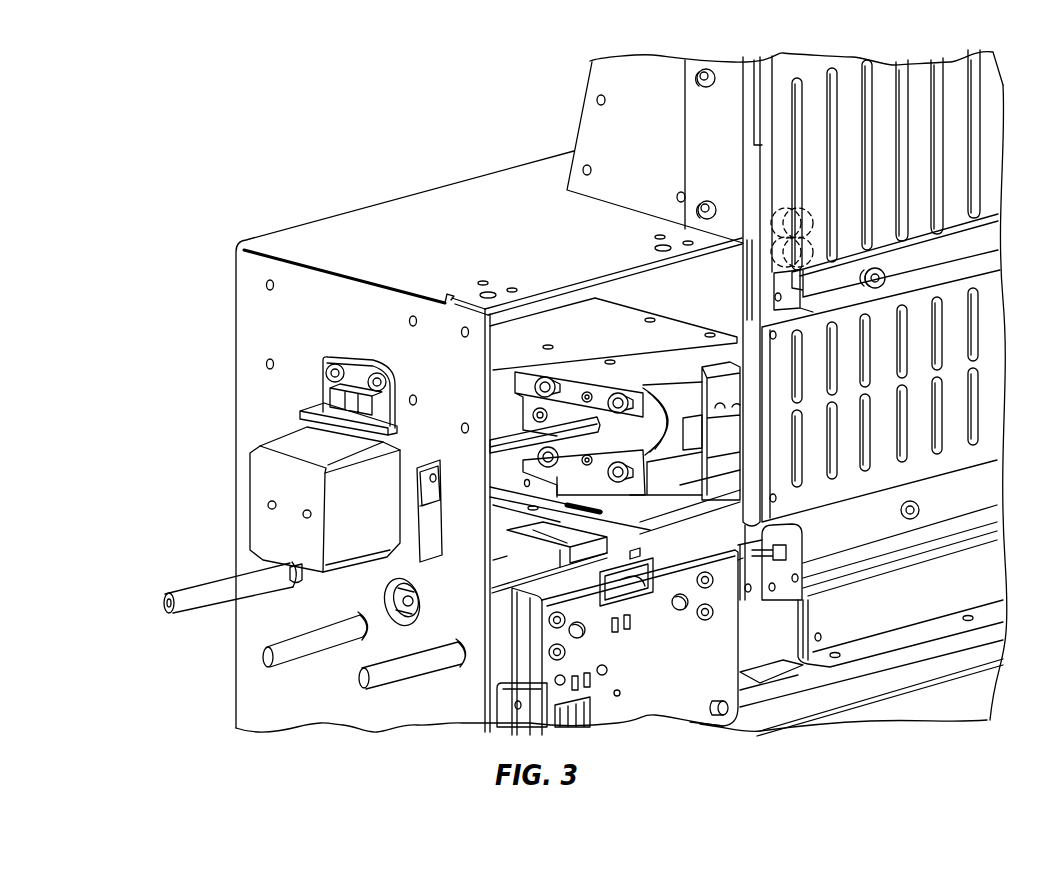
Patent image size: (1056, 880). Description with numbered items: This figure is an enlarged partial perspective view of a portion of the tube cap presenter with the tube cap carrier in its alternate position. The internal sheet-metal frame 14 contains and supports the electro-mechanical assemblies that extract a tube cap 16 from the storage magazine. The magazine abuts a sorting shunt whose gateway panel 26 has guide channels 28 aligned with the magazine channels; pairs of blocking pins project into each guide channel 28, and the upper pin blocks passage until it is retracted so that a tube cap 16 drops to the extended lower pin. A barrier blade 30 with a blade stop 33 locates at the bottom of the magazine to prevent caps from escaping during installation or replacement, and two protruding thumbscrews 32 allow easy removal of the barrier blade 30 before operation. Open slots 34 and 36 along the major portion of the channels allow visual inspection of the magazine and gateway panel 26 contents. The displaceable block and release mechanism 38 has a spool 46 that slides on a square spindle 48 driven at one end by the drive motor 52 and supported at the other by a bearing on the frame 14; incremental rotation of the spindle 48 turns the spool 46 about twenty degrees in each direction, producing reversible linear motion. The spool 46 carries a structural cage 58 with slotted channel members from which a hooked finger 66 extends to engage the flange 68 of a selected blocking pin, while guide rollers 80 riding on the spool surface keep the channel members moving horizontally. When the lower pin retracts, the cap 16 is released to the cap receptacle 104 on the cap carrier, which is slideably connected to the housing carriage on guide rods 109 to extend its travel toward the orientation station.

The internal sheet-metal frame 14 is at (246, 319).
The tube cap 16 is at (776, 210).
The gateway panel 26 is at (742, 315).
The guide channels 28 is at (975, 315).
The barrier blade 30 is at (966, 263).
The thumbscrews 32 is at (887, 273).
The blade stop 33 is at (793, 300).
The open slots 34 is at (799, 80).
The open slots 36 is at (980, 395).
The block and release mechanism 38 is at (496, 376).
The spool 46 is at (660, 450).
The square spindle 48 is at (505, 437).
The drive motor 52 is at (272, 433).
The structural cage 58 is at (699, 350).
The hooked finger 66 is at (707, 390).
The flange 68 is at (697, 478).
The guide rollers 80 is at (669, 421).
The cap receptacle 104 is at (803, 547).
The guide rods 109 is at (360, 678).